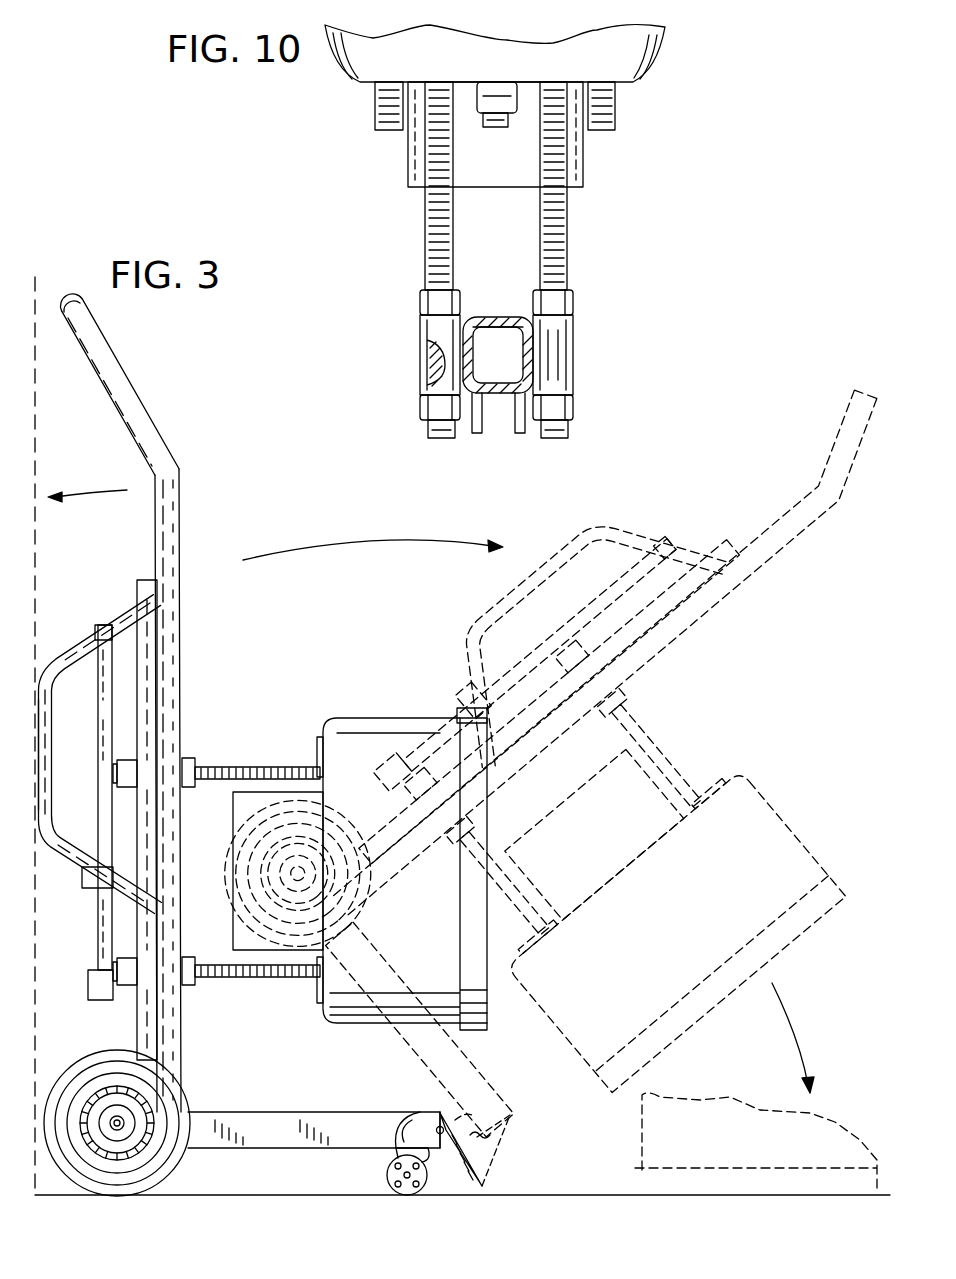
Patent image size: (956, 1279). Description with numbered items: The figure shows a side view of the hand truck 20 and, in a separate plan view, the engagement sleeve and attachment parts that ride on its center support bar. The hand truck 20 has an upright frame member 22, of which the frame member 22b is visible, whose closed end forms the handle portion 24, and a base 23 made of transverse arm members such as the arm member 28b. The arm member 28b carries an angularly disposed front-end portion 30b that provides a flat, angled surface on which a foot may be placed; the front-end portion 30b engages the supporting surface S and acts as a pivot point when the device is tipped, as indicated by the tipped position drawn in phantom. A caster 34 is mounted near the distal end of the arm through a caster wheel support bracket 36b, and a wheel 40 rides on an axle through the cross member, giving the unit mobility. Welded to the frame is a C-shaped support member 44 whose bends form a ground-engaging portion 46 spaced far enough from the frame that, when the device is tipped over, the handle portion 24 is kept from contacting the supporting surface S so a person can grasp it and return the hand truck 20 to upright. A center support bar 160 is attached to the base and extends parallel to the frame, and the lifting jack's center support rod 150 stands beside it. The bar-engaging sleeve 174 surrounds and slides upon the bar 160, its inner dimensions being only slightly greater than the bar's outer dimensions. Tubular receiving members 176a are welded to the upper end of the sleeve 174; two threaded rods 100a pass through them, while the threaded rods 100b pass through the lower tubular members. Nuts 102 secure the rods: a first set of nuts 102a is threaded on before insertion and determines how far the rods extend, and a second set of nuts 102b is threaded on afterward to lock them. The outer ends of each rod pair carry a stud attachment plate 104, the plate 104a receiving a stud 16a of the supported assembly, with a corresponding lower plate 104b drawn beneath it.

In FIG. 10, the stud 16a is at (495, 128).
In FIG. 3, the hand truck 20 is at (163, 675).
In FIG. 3, the frame member 22 is at (130, 392).
In FIG. 3, the frame member 22b is at (182, 658).
In FIG. 3, the base 23 is at (447, 1119).
In FIG. 3, the handle portion 24 is at (68, 300).
In FIG. 3, the arm member 28b is at (278, 1152).
In FIG. 3, the front-end portion 30b is at (468, 1157).
In FIG. 3, the caster 34 is at (388, 1167).
In FIG. 3, the caster wheel support bracket 36b is at (418, 1140).
In FIG. 3, the wheel 40 is at (103, 1048).
In FIG. 3, the support member 44 is at (100, 754).
In FIG. 3, the ground-engaging portion 46 is at (58, 750).
In FIG. 10, the threaded rod 100a is at (425, 240).
In FIG. 3, the threaded rod 100a is at (223, 765).
In FIG. 3, the threaded rod 100b is at (270, 980).
In FIG. 3, the nut 102 is at (130, 987).
In FIG. 10, the nut 102a is at (575, 300).
In FIG. 3, the nut 102a is at (190, 760).
In FIG. 10, the nut 102b is at (575, 405).
In FIG. 10, the stud attachment plate 104 is at (518, 80).
In FIG. 3, the stud attachment plate 104a is at (312, 748).
In FIG. 3, the lower mounting bracket 104b is at (316, 990).
In FIG. 3, the center support rod 150 is at (103, 623).
In FIG. 10, the center support bar 160 is at (488, 318).
In FIG. 3, the center support bar 160 is at (150, 580).
In FIG. 10, the bar-engaging sleeve 174 is at (500, 318).
In FIG. 10, the tubular receiving member 176a is at (425, 330).
In FIG. 3, the supporting surface S is at (37, 440).